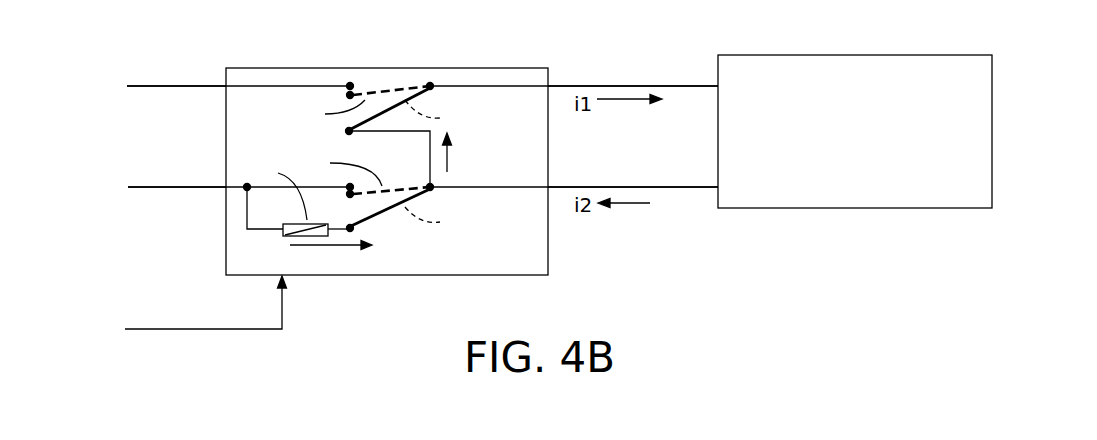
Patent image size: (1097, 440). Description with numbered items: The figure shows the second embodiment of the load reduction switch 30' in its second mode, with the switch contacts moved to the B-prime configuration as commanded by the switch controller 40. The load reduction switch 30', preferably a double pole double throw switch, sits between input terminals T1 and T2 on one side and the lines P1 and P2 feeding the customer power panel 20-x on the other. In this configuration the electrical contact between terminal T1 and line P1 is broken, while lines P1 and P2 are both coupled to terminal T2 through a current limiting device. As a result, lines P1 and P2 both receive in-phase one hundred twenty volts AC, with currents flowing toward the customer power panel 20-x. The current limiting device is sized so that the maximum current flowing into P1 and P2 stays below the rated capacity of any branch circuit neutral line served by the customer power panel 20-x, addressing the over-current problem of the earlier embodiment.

The load reduction switch (LRS) 30' is at (422, 145).
The customer power panel 20-x is at (1010, 56).
The switch controller 40 is at (145, 322).
The terminal T1 is at (168, 80).
The terminal T2 is at (168, 183).
The input line P1 is at (623, 83).
The input line P2 is at (623, 184).